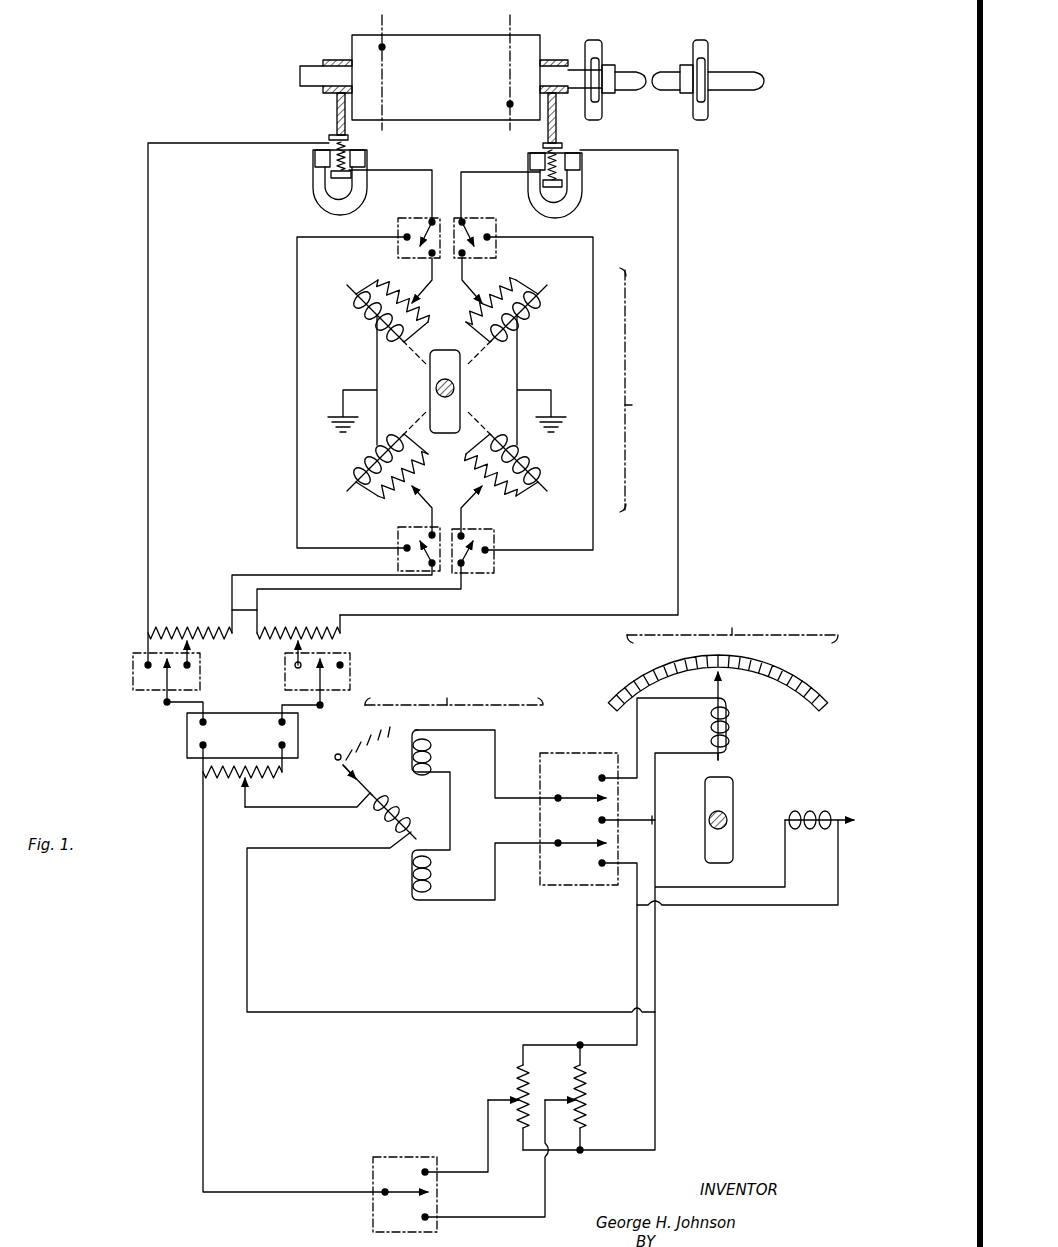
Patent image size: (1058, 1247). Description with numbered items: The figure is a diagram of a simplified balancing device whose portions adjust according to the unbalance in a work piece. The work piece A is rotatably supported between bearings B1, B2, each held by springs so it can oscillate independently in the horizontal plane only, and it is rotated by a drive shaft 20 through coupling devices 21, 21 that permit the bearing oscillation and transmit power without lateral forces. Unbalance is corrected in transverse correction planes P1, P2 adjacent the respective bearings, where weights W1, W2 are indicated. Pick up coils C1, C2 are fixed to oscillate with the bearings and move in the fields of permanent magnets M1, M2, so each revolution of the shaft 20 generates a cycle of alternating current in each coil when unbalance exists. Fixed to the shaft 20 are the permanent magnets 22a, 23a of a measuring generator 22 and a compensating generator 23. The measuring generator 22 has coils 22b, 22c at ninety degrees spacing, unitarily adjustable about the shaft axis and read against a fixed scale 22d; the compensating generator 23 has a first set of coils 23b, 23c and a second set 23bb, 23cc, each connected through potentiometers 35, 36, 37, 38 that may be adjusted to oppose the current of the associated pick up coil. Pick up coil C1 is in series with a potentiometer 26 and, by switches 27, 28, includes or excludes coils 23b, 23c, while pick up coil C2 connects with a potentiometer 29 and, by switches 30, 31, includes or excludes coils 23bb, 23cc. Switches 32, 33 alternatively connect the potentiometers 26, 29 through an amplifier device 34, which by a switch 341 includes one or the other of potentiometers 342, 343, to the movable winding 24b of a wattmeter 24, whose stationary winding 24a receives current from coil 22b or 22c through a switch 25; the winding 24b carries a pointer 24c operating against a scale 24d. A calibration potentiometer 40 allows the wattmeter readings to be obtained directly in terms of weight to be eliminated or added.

The work piece A is at (440, 110).
The drive shaft 20 is at (746, 88).
The coupling devices 21 is at (597, 56).
The bearing B1 is at (332, 58).
The bearing B2 is at (565, 58).
The transverse correction plane P1 is at (380, 66).
The transverse correction plane P2 is at (509, 66).
The weight W1 is at (384, 48).
The weight W2 is at (508, 104).
The pick up coil C1 is at (330, 137).
The pick up coil C2 is at (560, 146).
The permanent magnet M1 is at (313, 198).
The permanent magnet M2 is at (582, 200).
The switch 27 is at (392, 248).
The switch 30 is at (497, 243).
The switch 28 is at (392, 540).
The switch 31 is at (496, 538).
The compensating generator 23 is at (475, 393).
The permanent magnet 23a is at (453, 384).
The coil 23b is at (356, 323).
The coil 23c is at (356, 453).
The coil 23bb is at (522, 451).
The coil 23cc is at (523, 326).
The potentiometer 35 is at (410, 292).
The potentiometer 36 is at (410, 486).
The potentiometer 37 is at (484, 292).
The potentiometer 38 is at (484, 486).
The potentiometer 26 is at (185, 628).
The potentiometer 29 is at (302, 628).
The switch 32 is at (133, 676).
The switch 33 is at (352, 686).
The amplifier device 34 is at (187, 738).
The calibration potentiometer 40 is at (232, 779).
The wattmeter 24 is at (451, 846).
The stationary winding 24a is at (431, 767).
The movable winding 24b is at (451, 902).
The pointer 24c is at (356, 788).
The scale 24d is at (394, 745).
The switch 25 is at (566, 880).
The measuring generator 22 is at (691, 880).
The permanent magnet 22a is at (706, 800).
The coil 22b is at (738, 749).
The coil 22c is at (827, 812).
The fixed scale 22d is at (812, 687).
The potentiometer 342 is at (515, 1079).
The potentiometer 343 is at (590, 1081).
The switch 341 is at (371, 1226).